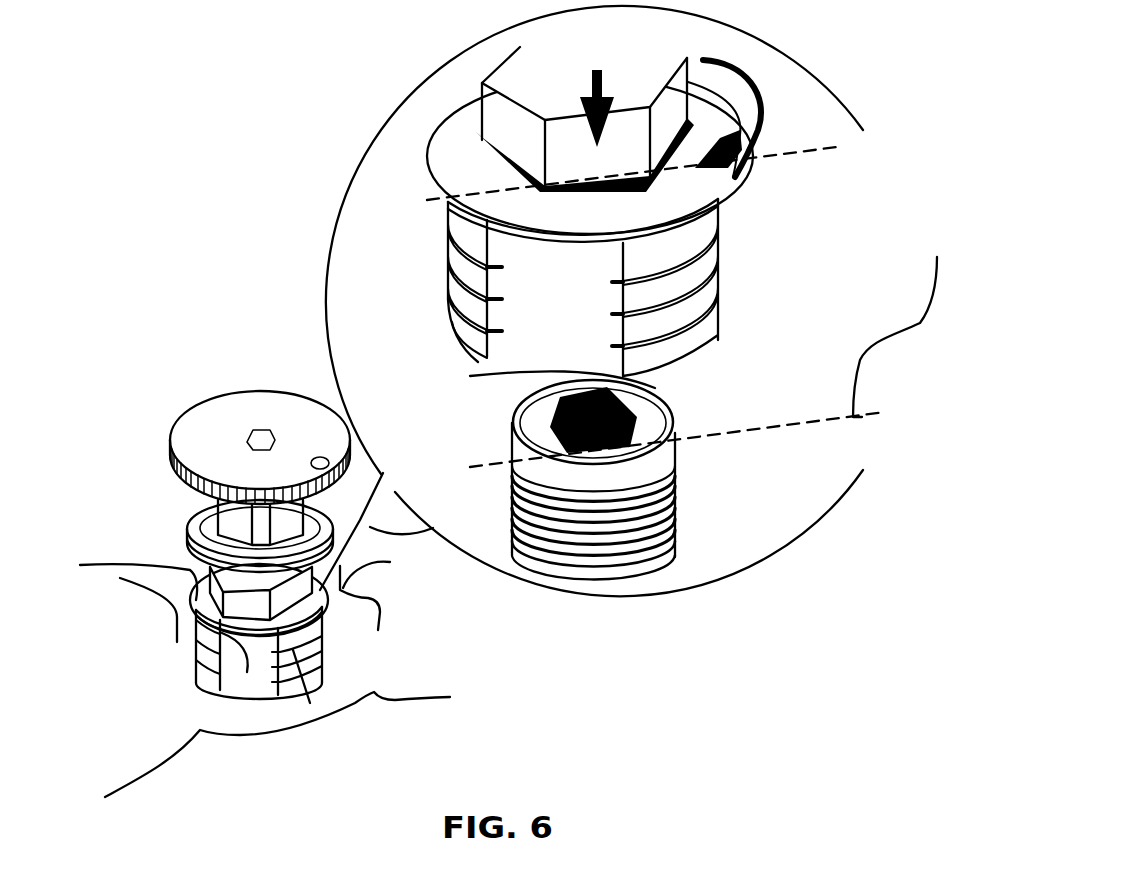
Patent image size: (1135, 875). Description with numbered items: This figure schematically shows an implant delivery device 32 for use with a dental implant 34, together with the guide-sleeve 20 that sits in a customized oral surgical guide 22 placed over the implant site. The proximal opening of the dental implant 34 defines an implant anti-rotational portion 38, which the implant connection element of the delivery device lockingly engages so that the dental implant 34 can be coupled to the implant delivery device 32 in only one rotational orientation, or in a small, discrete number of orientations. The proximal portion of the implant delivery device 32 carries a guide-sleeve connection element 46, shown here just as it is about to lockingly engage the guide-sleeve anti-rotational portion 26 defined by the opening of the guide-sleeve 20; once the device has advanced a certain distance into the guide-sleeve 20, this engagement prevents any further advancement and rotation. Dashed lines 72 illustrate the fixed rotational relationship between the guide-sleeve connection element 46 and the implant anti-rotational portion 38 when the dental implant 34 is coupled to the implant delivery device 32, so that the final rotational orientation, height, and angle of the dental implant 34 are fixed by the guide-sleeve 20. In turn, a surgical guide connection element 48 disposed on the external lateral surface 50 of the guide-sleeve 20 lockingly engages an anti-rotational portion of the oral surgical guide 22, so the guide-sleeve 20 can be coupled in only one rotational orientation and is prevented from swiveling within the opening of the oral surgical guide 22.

The guide-sleeve 20 is at (582, 192).
The oral surgical guide 22 is at (103, 540).
The guide-sleeve anti-rotational portion 26 is at (687, 131).
The implant delivery device 32 is at (148, 432).
The dental implant 34 is at (677, 471).
The implant anti-rotational portion 38 is at (627, 410).
The guide-sleeve connection element 46 is at (497, 107).
The surgical guide connection element 48 is at (513, 347).
The external lateral surface 50 is at (660, 316).
The dashed lines 72 is at (783, 157).